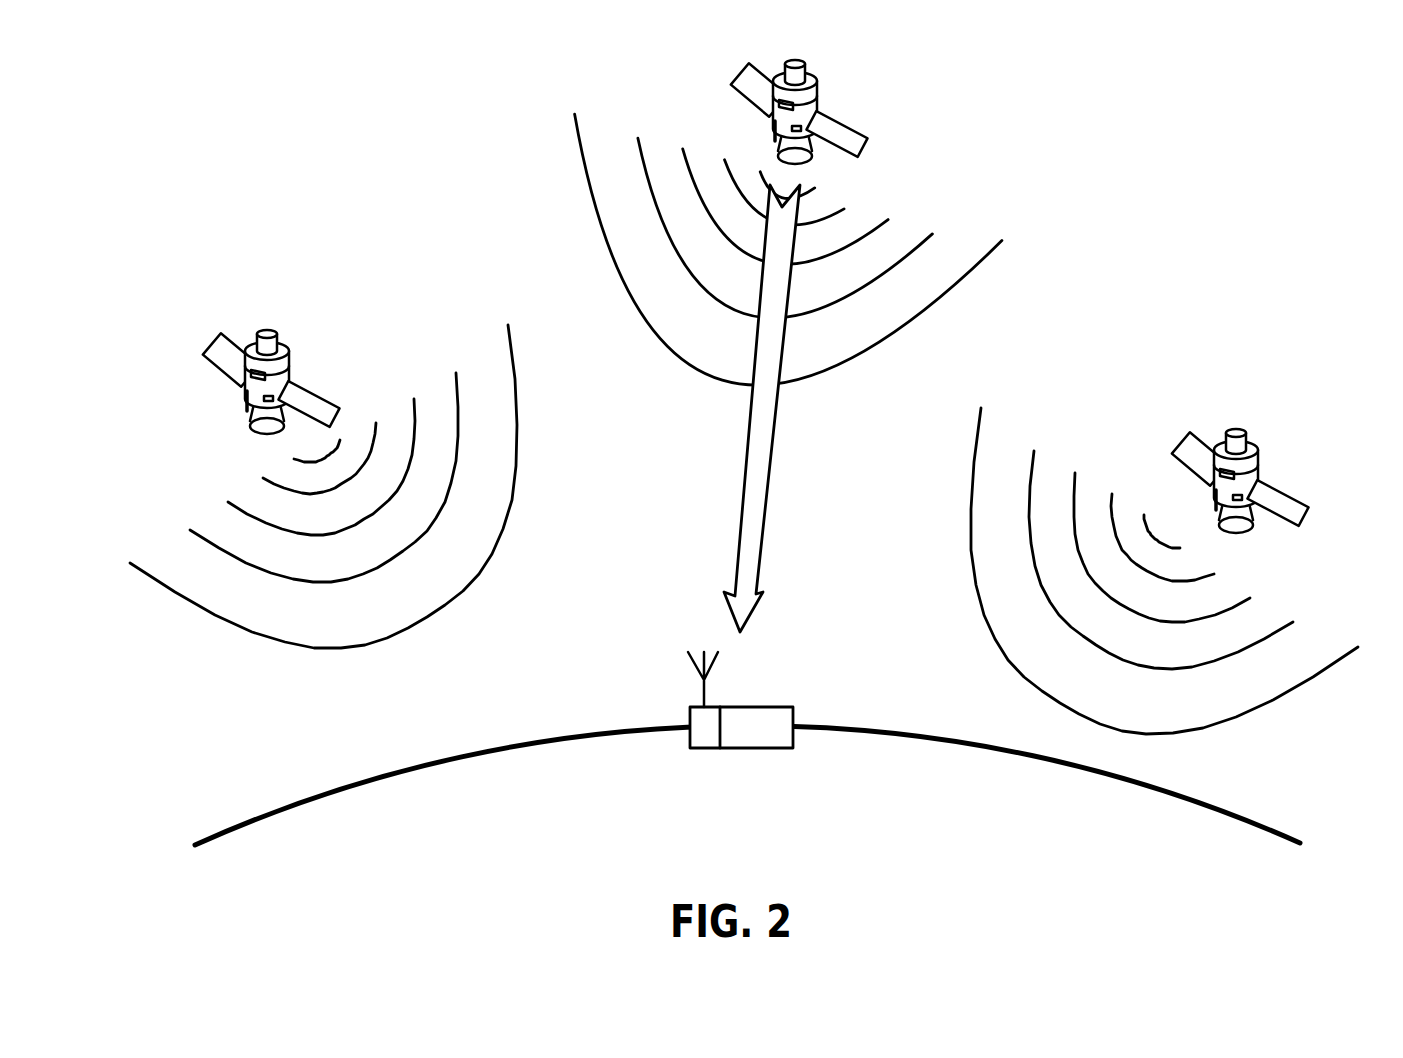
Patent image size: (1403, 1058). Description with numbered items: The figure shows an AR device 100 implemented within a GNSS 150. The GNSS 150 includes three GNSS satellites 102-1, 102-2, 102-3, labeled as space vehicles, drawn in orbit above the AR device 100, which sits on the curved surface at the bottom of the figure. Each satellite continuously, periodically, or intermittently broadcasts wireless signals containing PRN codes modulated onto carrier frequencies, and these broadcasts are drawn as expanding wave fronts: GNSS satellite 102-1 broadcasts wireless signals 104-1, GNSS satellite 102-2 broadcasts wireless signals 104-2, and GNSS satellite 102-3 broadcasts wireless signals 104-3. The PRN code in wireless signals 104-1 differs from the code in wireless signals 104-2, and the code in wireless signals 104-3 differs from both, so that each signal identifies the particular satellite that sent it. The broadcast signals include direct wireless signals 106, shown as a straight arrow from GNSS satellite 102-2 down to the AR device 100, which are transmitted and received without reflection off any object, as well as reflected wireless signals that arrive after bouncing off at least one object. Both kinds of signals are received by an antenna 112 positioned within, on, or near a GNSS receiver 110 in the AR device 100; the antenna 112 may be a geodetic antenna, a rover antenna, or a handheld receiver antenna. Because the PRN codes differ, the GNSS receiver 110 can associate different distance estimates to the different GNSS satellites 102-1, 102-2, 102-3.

The AR device 100 is at (713, 744).
The GNSS satellite 102-1 is at (337, 398).
The GNSS satellite 102-2 is at (867, 130).
The GNSS satellite 102-3 is at (1308, 498).
The wireless signals 104-1 is at (514, 443).
The wireless signals 104-2 is at (984, 279).
The wireless signals 104-3 is at (1262, 718).
The direct wireless signals 106 is at (749, 445).
The GNSS receiver 110 is at (700, 750).
The antenna 112 is at (689, 655).
The GNSS 150 is at (389, 870).